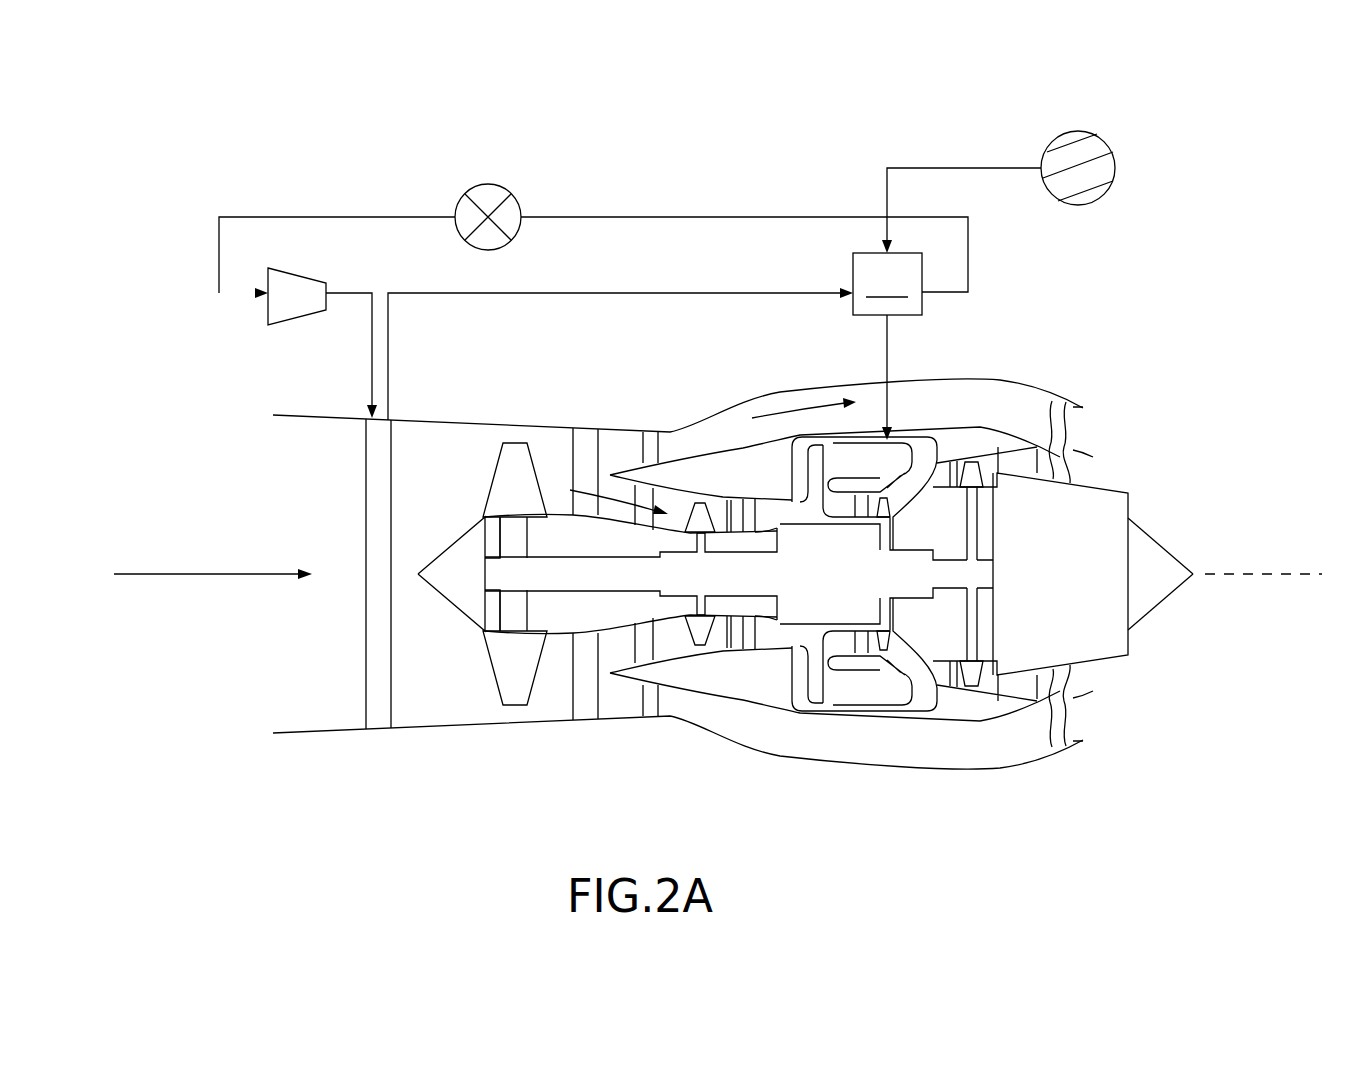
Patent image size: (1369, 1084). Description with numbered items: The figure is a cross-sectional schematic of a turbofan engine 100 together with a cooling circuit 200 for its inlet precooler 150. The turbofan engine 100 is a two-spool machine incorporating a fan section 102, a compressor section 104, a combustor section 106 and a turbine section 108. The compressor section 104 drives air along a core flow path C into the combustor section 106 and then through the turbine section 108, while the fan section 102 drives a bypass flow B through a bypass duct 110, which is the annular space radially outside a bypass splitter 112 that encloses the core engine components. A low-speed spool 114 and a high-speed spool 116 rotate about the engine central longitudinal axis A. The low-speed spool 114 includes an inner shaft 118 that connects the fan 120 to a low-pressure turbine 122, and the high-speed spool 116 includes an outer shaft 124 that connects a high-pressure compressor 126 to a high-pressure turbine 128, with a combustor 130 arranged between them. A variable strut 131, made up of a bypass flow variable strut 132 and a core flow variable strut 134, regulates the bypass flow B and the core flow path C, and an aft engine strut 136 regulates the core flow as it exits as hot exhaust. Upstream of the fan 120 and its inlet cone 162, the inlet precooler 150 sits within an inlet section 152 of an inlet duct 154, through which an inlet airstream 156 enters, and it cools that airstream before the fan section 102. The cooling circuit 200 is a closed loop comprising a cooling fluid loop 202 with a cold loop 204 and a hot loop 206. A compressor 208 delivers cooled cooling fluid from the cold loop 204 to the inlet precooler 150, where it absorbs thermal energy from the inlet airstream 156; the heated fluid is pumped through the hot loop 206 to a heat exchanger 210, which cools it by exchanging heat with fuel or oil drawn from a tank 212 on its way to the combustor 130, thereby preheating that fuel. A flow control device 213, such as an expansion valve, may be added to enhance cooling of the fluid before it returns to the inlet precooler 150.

The turbofan engine 100 is at (163, 354).
The fan section 102 is at (547, 403).
The compressor section 104 is at (797, 363).
The combustor section 106 is at (910, 363).
The turbine section 108 is at (998, 379).
The bypass duct 110 is at (1006, 404).
The bypass splitter 112 is at (759, 485).
The low-speed spool 114 is at (561, 576).
The high-speed spool 116 is at (698, 620).
The inner shaft 118 is at (601, 576).
The fan 120 is at (498, 677).
The low-pressure turbine 122 is at (973, 668).
The outer shaft 124 is at (760, 617).
The high-pressure compressor 126 is at (693, 688).
The high-pressure turbine 128 is at (887, 640).
The combustor 130 is at (886, 472).
The variable strut 131 is at (660, 446).
The bypass flow variable strut 132 is at (648, 440).
The core flow variable strut 134 is at (645, 492).
The aft engine strut 136 is at (1020, 693).
The inlet precooler 150 is at (378, 450).
The inlet section 152 is at (440, 745).
The inlet duct 154 is at (290, 412).
The inlet airstream 156 is at (188, 576).
The inlet cone 162 is at (457, 603).
The cooling circuit 200 is at (272, 146).
The cooling fluid loop 202 is at (621, 188).
The cold loop 204 is at (715, 217).
The hot loop 206 is at (543, 292).
The compressor 208 is at (304, 268).
The heat exchanger 210 is at (853, 258).
The tank 212 is at (1114, 165).
The flow control device 213 is at (490, 184).
The engine central longitudinal axis A is at (1262, 578).
The bypass flow B is at (794, 418).
The core flow path C is at (608, 496).